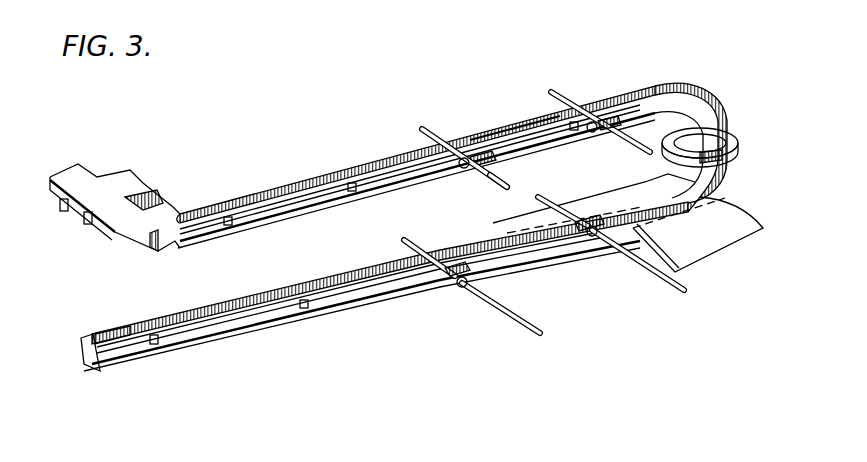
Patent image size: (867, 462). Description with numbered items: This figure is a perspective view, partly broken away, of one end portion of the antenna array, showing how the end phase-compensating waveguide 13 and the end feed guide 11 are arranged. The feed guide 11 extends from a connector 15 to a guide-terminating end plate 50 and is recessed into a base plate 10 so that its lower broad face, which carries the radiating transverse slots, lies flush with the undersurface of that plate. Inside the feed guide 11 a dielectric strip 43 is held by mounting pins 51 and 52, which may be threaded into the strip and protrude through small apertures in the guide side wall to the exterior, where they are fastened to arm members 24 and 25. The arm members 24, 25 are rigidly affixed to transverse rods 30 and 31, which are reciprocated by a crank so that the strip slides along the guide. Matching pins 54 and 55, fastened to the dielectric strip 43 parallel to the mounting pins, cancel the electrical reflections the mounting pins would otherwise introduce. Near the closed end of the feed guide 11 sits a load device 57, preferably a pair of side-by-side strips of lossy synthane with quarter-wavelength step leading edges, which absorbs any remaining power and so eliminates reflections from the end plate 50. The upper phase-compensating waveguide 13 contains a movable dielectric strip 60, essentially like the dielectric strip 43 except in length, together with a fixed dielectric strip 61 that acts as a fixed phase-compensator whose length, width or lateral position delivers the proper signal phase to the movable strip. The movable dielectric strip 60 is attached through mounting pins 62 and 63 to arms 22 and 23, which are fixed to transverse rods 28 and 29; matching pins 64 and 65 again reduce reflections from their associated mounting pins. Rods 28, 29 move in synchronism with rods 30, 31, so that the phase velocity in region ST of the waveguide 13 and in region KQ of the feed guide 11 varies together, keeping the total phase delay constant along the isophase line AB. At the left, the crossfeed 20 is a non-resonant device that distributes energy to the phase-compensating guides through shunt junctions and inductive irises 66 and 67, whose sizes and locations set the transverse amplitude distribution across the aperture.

The base plate 10 is at (740, 212).
The end feed guide 11 is at (357, 286).
The end phase-compensating waveguide 13 is at (305, 176).
The connector 15 is at (733, 153).
The crossfeed 20 is at (257, 201).
The arm member 22 is at (618, 136).
The arm member 23 is at (463, 170).
The arm member 24 is at (603, 247).
The arm member 25 is at (464, 287).
The transverse rod 28 is at (555, 92).
The transverse rod 29 is at (428, 128).
The transverse rod 30 is at (690, 290).
The transverse rod 31 is at (515, 326).
The dielectric strip 43 is at (388, 290).
The guide-terminating end plate 50 is at (80, 350).
The mounting pin 51 is at (598, 248).
The mounting pin 52 is at (455, 248).
The matching pin 54 is at (580, 246).
The matching pin 55 is at (488, 278).
The load device 57 is at (126, 312).
The movable dielectric strip 60 is at (507, 140).
The fixed dielectric strip 61 is at (306, 207).
The mounting pin 62 is at (600, 136).
The mounting pin 63 is at (116, 188).
The matching pin 64 is at (572, 122).
The matching pin 65 is at (496, 163).
The inductive iris 66 is at (62, 204).
The inductive iris 67 is at (87, 221).